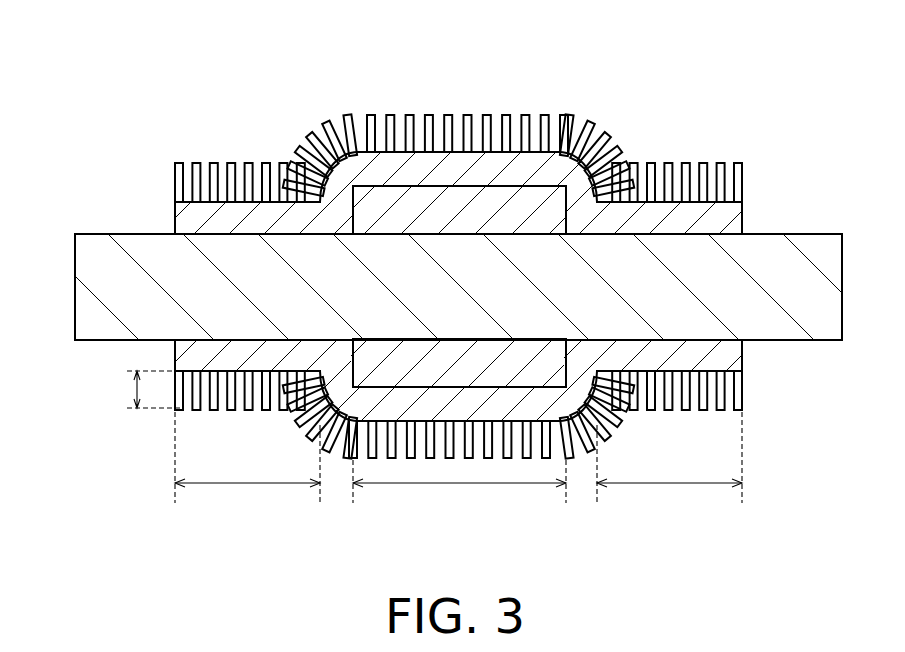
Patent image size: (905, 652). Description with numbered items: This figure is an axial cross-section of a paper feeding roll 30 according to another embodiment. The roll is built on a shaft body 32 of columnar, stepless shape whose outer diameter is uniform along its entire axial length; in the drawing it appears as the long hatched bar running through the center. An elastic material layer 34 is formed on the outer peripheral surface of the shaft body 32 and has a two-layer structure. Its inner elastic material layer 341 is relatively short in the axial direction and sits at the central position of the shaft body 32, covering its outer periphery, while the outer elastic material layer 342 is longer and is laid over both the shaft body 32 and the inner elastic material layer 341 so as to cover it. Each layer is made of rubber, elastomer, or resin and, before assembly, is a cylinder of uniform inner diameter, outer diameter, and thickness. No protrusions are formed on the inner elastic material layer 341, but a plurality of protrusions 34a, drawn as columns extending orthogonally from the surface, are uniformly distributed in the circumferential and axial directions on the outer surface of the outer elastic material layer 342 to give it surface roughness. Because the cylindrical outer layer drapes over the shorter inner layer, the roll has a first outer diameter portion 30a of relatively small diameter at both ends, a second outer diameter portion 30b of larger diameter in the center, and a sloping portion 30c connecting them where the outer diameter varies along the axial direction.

The paper feeding roll 30 is at (461, 271).
The first outer diameter portion 30a is at (458, 472).
The second outer diameter portion 30b is at (459, 496).
The sloping portion 30c is at (340, 136).
The shaft body 32 is at (122, 233).
The elastic material layer 34 is at (458, 229).
The protrusions 34a is at (211, 163).
The inner elastic material layer 341 is at (551, 208).
The outer elastic material layer 342 is at (500, 172).